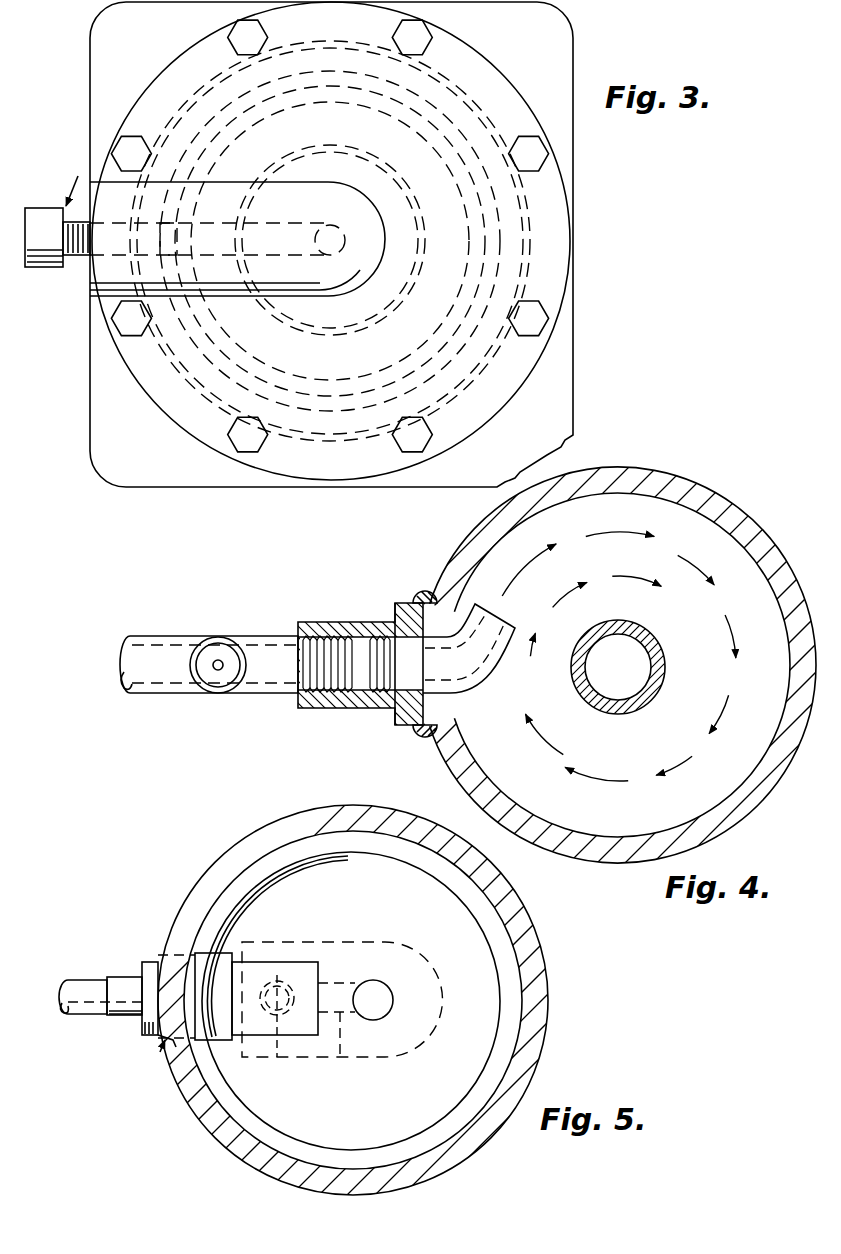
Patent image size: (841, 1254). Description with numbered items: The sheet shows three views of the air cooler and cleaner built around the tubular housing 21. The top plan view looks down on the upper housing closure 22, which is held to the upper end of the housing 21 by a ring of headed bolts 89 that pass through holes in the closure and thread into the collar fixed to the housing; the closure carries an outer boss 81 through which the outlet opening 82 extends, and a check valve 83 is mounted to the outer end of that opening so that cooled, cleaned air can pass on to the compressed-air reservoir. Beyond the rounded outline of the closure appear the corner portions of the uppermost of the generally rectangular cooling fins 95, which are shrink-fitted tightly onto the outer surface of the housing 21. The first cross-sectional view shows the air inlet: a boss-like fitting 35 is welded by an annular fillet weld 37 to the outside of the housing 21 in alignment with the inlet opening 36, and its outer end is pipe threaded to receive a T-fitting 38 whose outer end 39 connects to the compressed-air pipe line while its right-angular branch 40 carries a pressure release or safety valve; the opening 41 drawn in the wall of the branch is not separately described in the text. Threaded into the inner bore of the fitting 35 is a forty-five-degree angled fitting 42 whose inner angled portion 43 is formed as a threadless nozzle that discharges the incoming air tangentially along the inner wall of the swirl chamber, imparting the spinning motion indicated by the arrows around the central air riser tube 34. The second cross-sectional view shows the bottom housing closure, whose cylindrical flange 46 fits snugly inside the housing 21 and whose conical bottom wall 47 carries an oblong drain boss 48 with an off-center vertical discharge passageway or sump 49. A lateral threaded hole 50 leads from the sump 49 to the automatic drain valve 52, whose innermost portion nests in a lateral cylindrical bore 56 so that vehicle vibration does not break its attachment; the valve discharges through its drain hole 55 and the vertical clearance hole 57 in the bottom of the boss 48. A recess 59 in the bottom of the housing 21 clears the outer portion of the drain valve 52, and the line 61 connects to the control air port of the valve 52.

In FIG. 4, the tubular housing 21 is at (742, 527).
In FIG. 5, the tubular housing 21 is at (535, 962).
In FIG. 3, the upper housing closure 22 is at (492, 75).
In FIG. 4, the air riser tube 34 is at (666, 670).
In FIG. 4, the boss-like fitting 35 is at (322, 622).
In FIG. 4, the inlet opening 36 is at (440, 708).
In FIG. 4, the annular fillet weld 37 is at (410, 597).
In FIG. 4, the T-fitting 38 is at (258, 635).
In FIG. 4, the outer end 39 is at (133, 636).
In FIG. 4, the right-angular branch 40 is at (222, 692).
In FIG. 4, the orifice 41 is at (214, 650).
In FIG. 4, the 45°-angled fitting 42 is at (410, 709).
In FIG. 4, the inner angled portion 43 is at (478, 683).
In FIG. 5, the cylindrical flange 46 is at (508, 1036).
In FIG. 5, the conical bottom wall 47 is at (487, 1012).
In FIG. 5, the oblong drain boss 48 is at (322, 942).
In FIG. 5, the discharge passageway 49 is at (390, 1005).
In FIG. 5, the lateral threaded hole 50 is at (338, 1057).
In FIG. 5, the automatic drain valve 52 is at (125, 978).
In FIG. 5, the drain hole 55 is at (275, 1060).
In FIG. 5, the lateral cylindrical bore 56 is at (275, 962).
In FIG. 5, the vertical clearance hole 57 is at (290, 1015).
In FIG. 5, the recess 59 is at (158, 1062).
In FIG. 5, the line 61 is at (70, 985).
In FIG. 3, the outer boss 81 is at (215, 181).
In FIG. 3, the outlet opening 82 is at (203, 222).
In FIG. 3, the check valve 83 is at (36, 268).
In FIG. 3, the headed bolts 89 is at (546, 168).
In FIG. 3, the cooling fins 95 is at (548, 432).